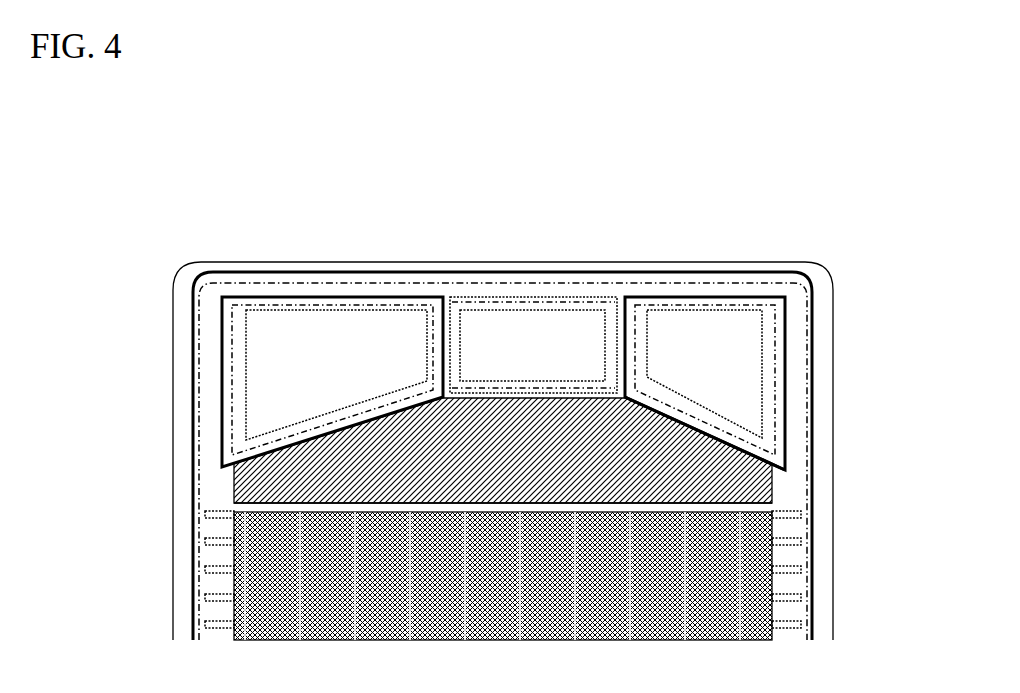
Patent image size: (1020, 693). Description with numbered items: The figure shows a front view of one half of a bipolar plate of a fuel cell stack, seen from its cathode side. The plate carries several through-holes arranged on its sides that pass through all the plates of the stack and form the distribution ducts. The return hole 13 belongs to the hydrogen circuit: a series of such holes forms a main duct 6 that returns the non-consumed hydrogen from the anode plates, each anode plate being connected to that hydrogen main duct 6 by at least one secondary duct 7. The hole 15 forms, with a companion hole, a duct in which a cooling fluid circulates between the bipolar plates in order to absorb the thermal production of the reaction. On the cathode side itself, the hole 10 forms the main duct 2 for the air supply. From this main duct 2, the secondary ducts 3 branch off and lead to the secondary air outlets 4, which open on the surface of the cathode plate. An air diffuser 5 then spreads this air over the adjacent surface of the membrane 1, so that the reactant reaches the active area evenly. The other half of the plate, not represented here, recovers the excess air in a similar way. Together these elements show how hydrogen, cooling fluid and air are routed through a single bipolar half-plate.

The membrane 1 is at (267, 603).
The main duct 2 is at (733, 383).
The secondary ducts 3 is at (738, 428).
The secondary air outlets 4 is at (745, 449).
The air diffuser 5 is at (772, 503).
The main duct 6 is at (282, 383).
The secondary duct 7 is at (278, 432).
The hole 10 is at (705, 333).
The return hole 13 is at (305, 342).
The hole 15 is at (518, 333).